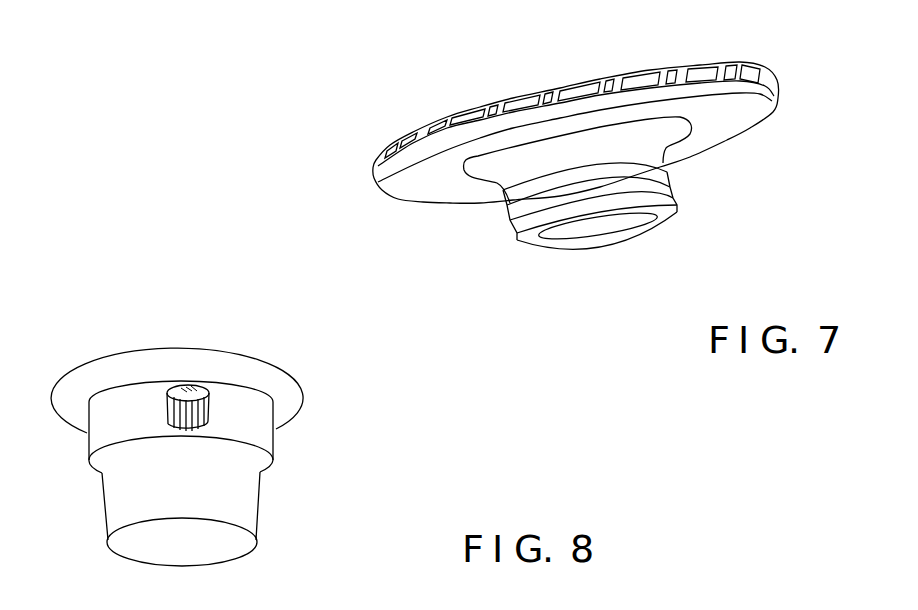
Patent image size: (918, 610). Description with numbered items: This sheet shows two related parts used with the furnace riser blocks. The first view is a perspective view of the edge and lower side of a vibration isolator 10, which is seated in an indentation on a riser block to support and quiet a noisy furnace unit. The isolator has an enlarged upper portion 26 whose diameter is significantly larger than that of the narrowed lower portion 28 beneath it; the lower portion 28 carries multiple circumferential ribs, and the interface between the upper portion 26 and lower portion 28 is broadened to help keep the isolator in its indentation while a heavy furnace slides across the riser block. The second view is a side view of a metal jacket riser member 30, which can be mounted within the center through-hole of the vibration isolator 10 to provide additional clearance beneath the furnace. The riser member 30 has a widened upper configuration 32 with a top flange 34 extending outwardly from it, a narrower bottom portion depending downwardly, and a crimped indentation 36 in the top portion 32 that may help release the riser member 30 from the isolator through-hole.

In FIG. 7, the vibration isolator 10 is at (340, 72).
In FIG. 7, the enlarged upper portion 26 is at (378, 182).
In FIG. 7, the narrowed lower portion 28 is at (660, 184).
In FIG. 8, the metal jacket riser member 30 is at (231, 401).
In FIG. 8, the widened upper configuration 32 is at (257, 407).
In FIG. 8, the top flange 34 is at (287, 392).
In FIG. 8, the crimped indentation 36 is at (224, 428).